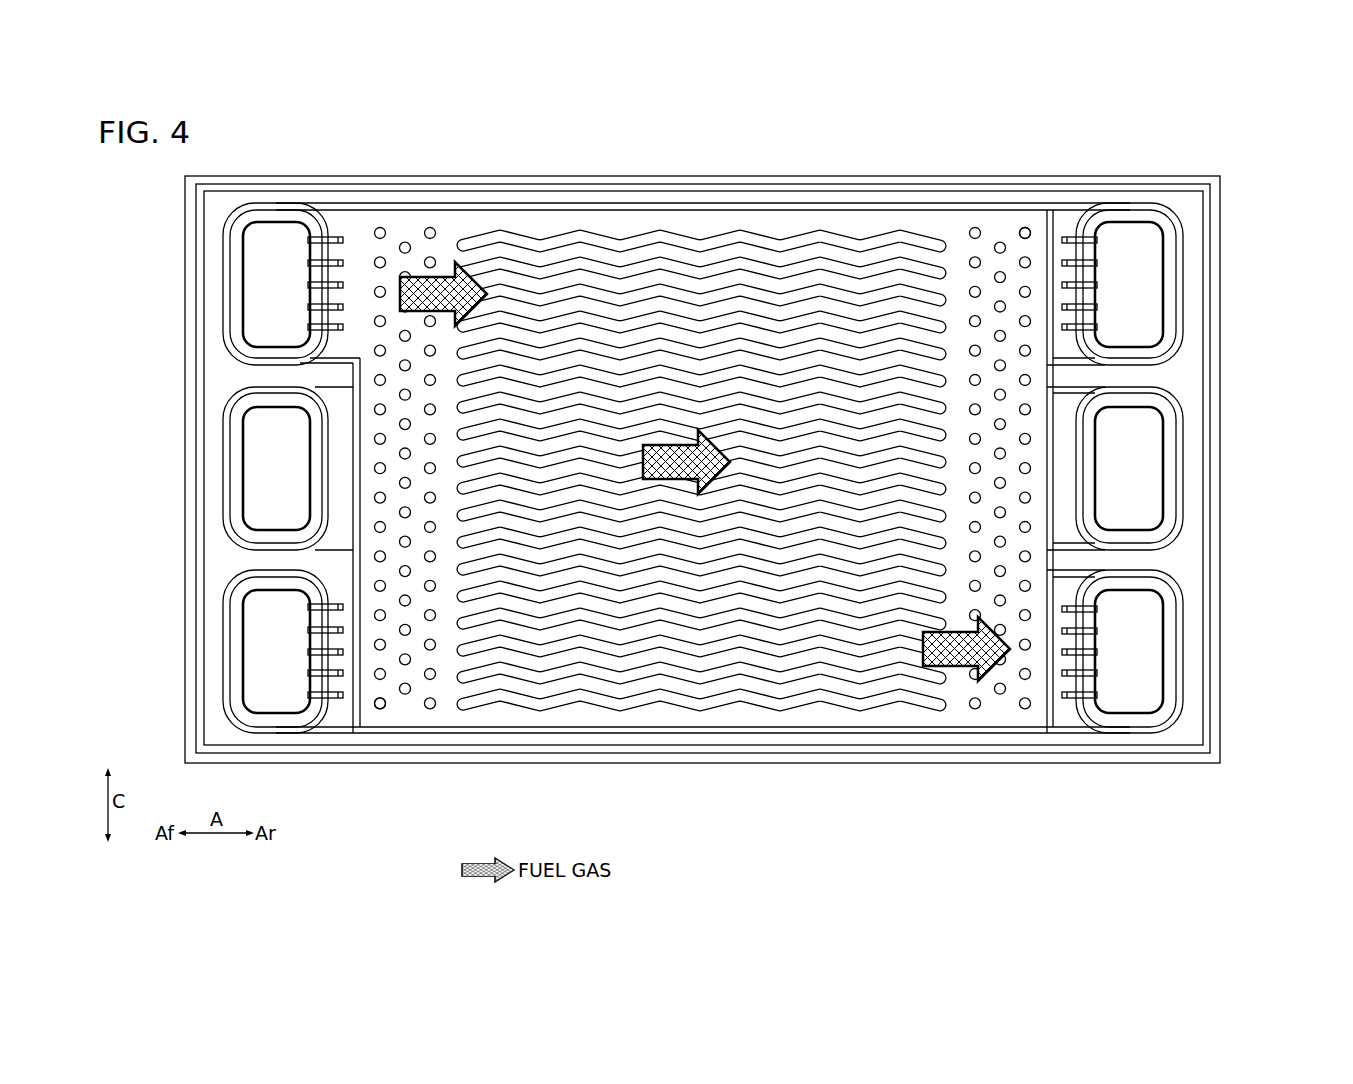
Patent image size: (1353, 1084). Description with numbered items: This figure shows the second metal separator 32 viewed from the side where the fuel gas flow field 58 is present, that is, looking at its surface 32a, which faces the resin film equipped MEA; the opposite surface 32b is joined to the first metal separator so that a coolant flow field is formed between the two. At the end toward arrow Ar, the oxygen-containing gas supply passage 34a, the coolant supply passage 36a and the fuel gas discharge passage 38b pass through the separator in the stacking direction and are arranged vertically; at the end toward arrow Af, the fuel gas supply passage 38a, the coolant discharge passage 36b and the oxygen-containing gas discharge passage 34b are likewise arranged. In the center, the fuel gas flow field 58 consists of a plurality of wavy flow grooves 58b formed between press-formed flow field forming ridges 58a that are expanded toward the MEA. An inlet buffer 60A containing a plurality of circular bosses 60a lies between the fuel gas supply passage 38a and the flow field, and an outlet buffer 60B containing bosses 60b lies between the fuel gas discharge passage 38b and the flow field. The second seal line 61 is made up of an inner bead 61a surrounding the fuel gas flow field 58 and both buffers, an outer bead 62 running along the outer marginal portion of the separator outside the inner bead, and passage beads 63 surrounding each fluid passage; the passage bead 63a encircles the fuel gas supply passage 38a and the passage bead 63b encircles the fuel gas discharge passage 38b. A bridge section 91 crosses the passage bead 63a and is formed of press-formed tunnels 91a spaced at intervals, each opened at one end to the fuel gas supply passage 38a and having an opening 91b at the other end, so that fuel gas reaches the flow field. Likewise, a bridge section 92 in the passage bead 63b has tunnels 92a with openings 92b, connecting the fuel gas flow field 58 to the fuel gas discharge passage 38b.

The second metal separator 32 is at (1177, 144).
The surface 32a is at (480, 740).
The surface 32b is at (546, 735).
The oxygen-containing gas supply passage 34a is at (1145, 270).
The oxygen-containing gas discharge passage 34b is at (262, 667).
The coolant supply passage 36a is at (1145, 457).
The coolant discharge passage 36b is at (260, 468).
The fuel gas supply passage 38a is at (262, 258).
The fuel gas discharge passage 38b is at (1145, 680).
The fuel gas flow field 58 is at (630, 148).
The flow field forming ridges 58a is at (513, 262).
The flow grooves 58b is at (650, 252).
The bosses 60a is at (380, 710).
The inlet buffer 60A is at (431, 722).
The bosses 60b is at (1027, 227).
The outlet buffer 60B is at (977, 220).
The second seal line 61 is at (1258, 806).
The inner bead 61a is at (1070, 737).
The outer bead 62 is at (1140, 755).
The passage beads 63 is at (1180, 236).
The passage bead 63a is at (221, 302).
The passage bead 63b is at (1170, 722).
The bridge section 91 is at (336, 226).
The tunnels 91a is at (317, 276).
The opening 91b is at (345, 285).
The bridge section 92 is at (1058, 714).
The tunnels 92a is at (1092, 635).
The opening 92b is at (1062, 631).